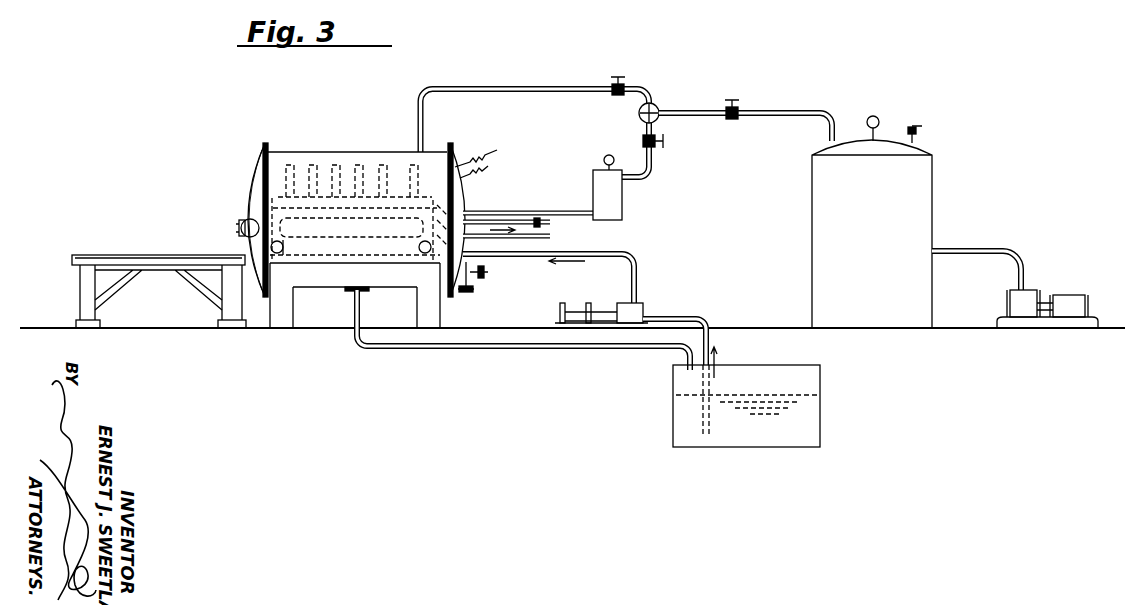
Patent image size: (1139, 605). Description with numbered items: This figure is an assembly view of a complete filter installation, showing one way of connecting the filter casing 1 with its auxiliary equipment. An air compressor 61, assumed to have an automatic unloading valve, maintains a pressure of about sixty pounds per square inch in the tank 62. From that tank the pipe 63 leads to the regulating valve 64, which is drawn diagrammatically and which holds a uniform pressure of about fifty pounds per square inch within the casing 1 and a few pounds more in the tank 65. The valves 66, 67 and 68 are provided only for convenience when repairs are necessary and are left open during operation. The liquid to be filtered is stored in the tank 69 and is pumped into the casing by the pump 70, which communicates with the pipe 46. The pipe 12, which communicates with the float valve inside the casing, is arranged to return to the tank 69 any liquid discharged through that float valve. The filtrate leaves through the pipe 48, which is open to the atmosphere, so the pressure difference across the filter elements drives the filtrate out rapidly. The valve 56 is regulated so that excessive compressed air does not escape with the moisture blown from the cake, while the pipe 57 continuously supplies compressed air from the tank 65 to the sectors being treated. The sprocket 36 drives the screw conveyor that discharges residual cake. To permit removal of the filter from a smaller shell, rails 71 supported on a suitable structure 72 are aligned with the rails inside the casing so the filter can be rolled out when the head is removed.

The casing 1 is at (388, 152).
The pipe 12 is at (360, 294).
The sprocket 36 is at (487, 284).
The pipe 46 is at (523, 257).
The pipe 48 is at (558, 239).
The valve 56 is at (540, 221).
The pipe 57 is at (472, 214).
The air compressor 61 is at (1010, 302).
The tank 62 is at (918, 190).
The pipe 63 is at (786, 110).
The regulating valve 64 is at (639, 113).
The tank 65 is at (602, 178).
The valve 66 is at (658, 145).
The valve 67 is at (625, 80).
The valve 68 is at (733, 121).
The tank 69 is at (746, 406).
The pump 70 is at (646, 305).
The rails 71 is at (131, 256).
The supporting structure 72 is at (88, 286).